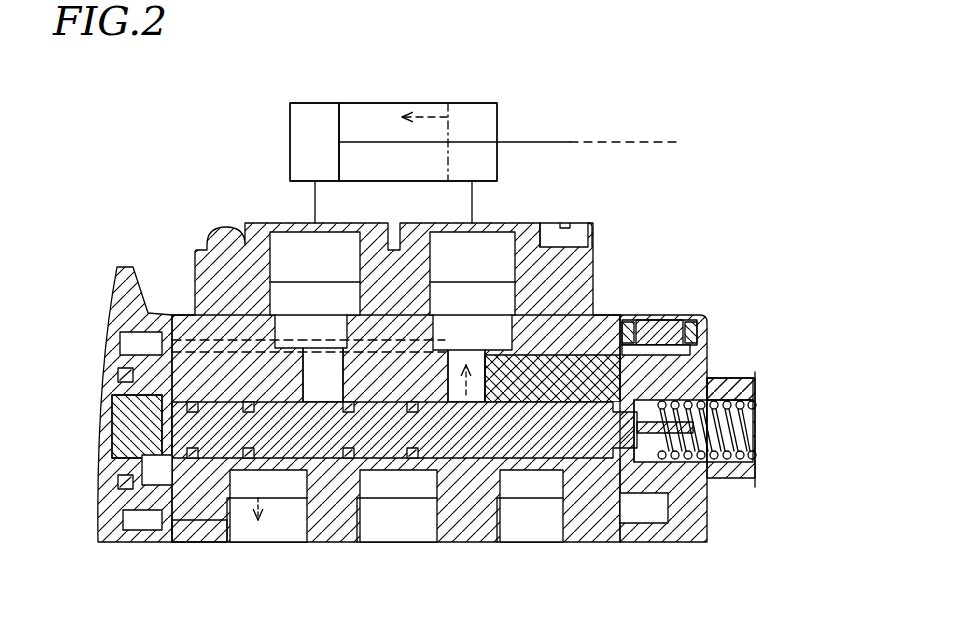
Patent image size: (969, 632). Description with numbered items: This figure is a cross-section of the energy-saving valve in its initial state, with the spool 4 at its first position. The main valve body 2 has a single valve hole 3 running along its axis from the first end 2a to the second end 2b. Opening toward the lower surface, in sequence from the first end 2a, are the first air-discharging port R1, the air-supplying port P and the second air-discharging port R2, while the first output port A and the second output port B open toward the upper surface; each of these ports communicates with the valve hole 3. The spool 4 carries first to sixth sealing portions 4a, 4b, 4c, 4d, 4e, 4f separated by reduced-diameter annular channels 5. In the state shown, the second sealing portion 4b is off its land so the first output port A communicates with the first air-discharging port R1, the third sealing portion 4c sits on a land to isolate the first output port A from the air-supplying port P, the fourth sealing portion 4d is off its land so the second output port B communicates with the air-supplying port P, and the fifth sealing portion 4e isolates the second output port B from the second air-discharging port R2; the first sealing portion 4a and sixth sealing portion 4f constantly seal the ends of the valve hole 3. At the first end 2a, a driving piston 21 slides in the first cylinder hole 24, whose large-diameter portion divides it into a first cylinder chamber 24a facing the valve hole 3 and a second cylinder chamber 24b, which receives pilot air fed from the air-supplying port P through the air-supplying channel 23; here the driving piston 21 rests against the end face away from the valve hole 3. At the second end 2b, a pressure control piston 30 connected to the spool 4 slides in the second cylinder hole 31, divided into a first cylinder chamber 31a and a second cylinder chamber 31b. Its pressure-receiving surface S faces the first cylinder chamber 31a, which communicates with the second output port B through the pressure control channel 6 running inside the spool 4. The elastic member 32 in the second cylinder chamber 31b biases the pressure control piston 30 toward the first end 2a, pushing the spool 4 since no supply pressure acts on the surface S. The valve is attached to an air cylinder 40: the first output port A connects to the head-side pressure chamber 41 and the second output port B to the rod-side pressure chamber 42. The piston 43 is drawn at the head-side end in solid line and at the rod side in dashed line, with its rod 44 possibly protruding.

The main valve body 2 is at (601, 302).
The first end 2a is at (146, 545).
The second end 2b is at (640, 508).
The valve hole 3 is at (287, 402).
The spool 4 is at (205, 428).
The first sealing portion 4a is at (193, 462).
The second sealing portion 4b is at (247, 462).
The third sealing portion 4c is at (330, 462).
The fourth sealing portion 4d is at (350, 462).
The fifth sealing portion 4e is at (492, 462).
The sixth sealing portion 4f is at (600, 460).
The annular channels 5 is at (457, 465).
The pressure control channel 6 is at (552, 402).
The driving piston 21 is at (128, 424).
The air-supplying channel 23 is at (190, 345).
The first cylinder hole 24 is at (115, 375).
The first cylinder chamber 24a is at (130, 540).
The second cylinder chamber 24b is at (117, 482).
The pressure control piston 30 is at (688, 332).
The second cylinder hole 31 is at (712, 478).
The first cylinder chamber 31a is at (641, 392).
The second cylinder chamber 31b is at (726, 392).
The elastic member 32 is at (730, 442).
The air cylinder 40 is at (274, 90).
The head-side pressure chamber 41 is at (317, 117).
The rod-side pressure chamber 42 is at (486, 110).
The piston 43 is at (340, 117).
The rod 44 is at (537, 142).
The first output port A is at (323, 360).
The second output port B is at (482, 348).
The air-supplying port P is at (398, 545).
The first air-discharging port R1 is at (270, 545).
The second air-discharging port R2 is at (530, 545).
The pressure-receiving surface S is at (612, 470).